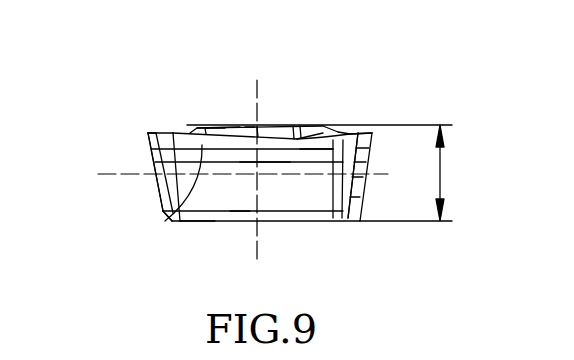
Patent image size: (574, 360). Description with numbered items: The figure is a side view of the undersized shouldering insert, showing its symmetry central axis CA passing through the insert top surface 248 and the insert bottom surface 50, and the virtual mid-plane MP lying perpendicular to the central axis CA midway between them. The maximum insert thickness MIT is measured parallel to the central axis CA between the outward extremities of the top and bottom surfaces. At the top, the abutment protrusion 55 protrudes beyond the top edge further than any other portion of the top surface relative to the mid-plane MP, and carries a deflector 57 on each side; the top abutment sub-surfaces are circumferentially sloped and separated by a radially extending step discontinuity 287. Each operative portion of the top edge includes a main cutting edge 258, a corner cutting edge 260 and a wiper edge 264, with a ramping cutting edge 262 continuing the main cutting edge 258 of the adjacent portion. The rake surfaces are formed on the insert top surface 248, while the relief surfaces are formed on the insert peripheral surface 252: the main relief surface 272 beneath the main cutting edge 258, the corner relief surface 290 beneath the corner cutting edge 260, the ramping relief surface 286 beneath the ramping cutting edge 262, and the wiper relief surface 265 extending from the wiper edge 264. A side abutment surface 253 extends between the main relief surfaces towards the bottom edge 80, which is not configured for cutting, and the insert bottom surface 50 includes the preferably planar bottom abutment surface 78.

The abutment protrusion 55 is at (193, 123).
The insert top surface 248 is at (211, 123).
The main cutting edge 258 is at (227, 124).
The step discontinuity 287 is at (250, 119).
The ramping cutting edge 262 is at (325, 136).
The deflector 57 is at (345, 133).
The wiper edge 264 is at (365, 133).
The corner cutting edge 260 is at (150, 131).
The corner relief surface 290 is at (157, 136).
The main relief surface 272 is at (165, 222).
The bottom edge 80 is at (207, 223).
The bottom abutment surface 78 is at (207, 235).
The insert bottom surface 50 is at (227, 223).
The side abutment surface 253 is at (240, 192).
The insert peripheral surface 252 is at (263, 182).
The ramping relief surface 286 is at (320, 150).
The wiper relief surface 265 is at (352, 148).
The symmetry central axis CA is at (258, 102).
The mid-plane MP is at (133, 176).
The maximum insert thickness MIT is at (337, 173).